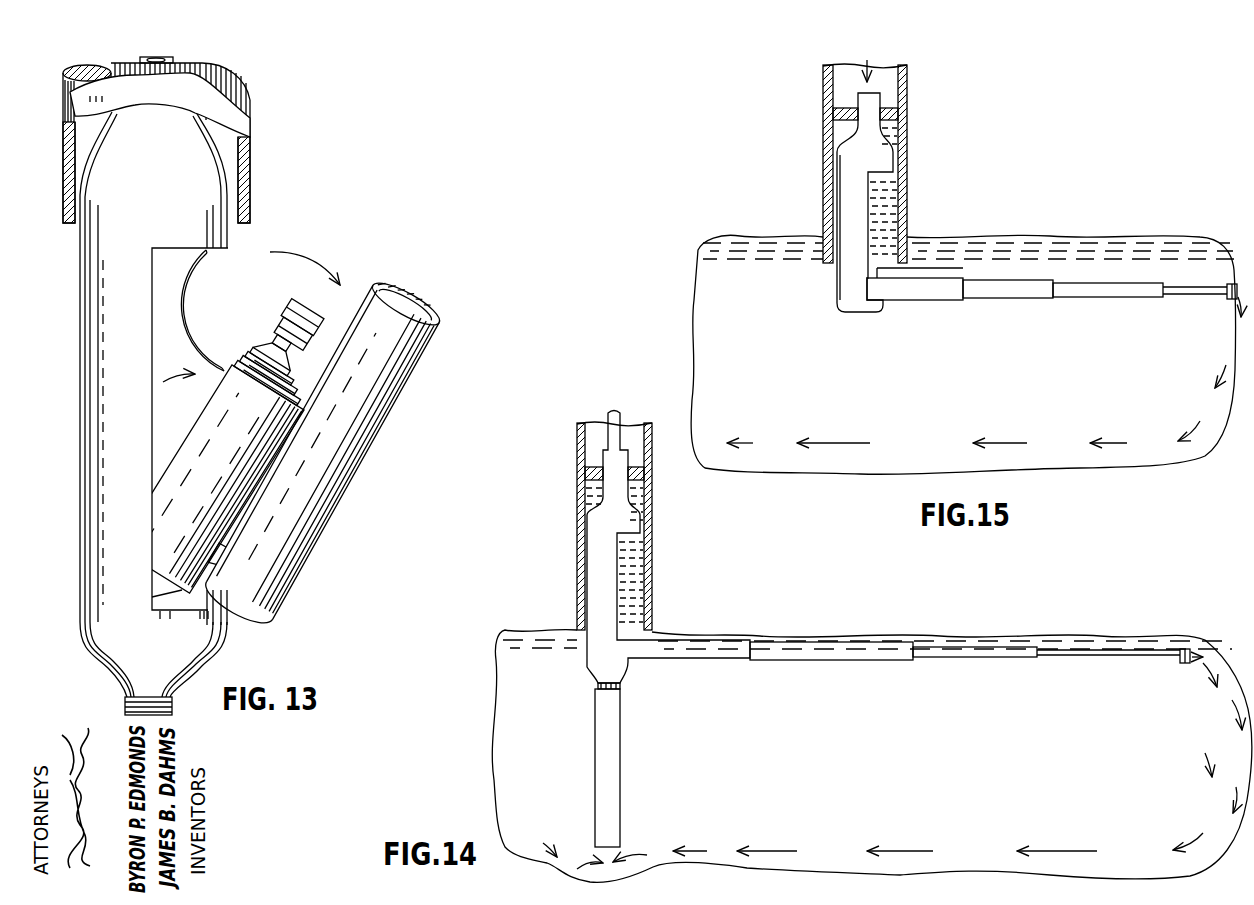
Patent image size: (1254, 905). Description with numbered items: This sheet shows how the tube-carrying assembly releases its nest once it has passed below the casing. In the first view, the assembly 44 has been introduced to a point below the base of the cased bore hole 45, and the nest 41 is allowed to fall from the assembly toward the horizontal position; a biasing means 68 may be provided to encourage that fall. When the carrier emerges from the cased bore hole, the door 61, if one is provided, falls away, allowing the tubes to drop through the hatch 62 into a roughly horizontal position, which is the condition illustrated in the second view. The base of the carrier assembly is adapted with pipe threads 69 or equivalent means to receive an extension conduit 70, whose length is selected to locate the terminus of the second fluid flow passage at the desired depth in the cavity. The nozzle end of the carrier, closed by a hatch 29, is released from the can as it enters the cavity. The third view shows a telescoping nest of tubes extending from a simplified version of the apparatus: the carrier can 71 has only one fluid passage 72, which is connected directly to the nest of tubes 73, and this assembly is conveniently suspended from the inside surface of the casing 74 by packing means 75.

In FIG. 13, the hatch 29 is at (306, 302).
In FIG. 13, the nest 41 is at (207, 416).
In FIG. 14, the nest 41 is at (780, 660).
In FIG. 13, the assembly 44 is at (88, 404).
In FIG. 13, the cased bore hole 45 is at (250, 205).
In FIG. 13, the door 61 is at (315, 525).
In FIG. 13, the hatch 62 is at (172, 340).
In FIG. 13, the biasing means 68 is at (196, 281).
In FIG. 13, the pipe threads 69 is at (125, 703).
In FIG. 14, the pipe threads 69 is at (633, 662).
In FIG. 14, the extension conduit 70 is at (597, 760).
In FIG. 15, the carrier can 71 is at (845, 213).
In FIG. 15, the fluid passage 72 is at (867, 93).
In FIG. 15, the nest of tubes 73 is at (910, 300).
In FIG. 15, the casing 74 is at (823, 185).
In FIG. 15, the packing means 75 is at (833, 113).